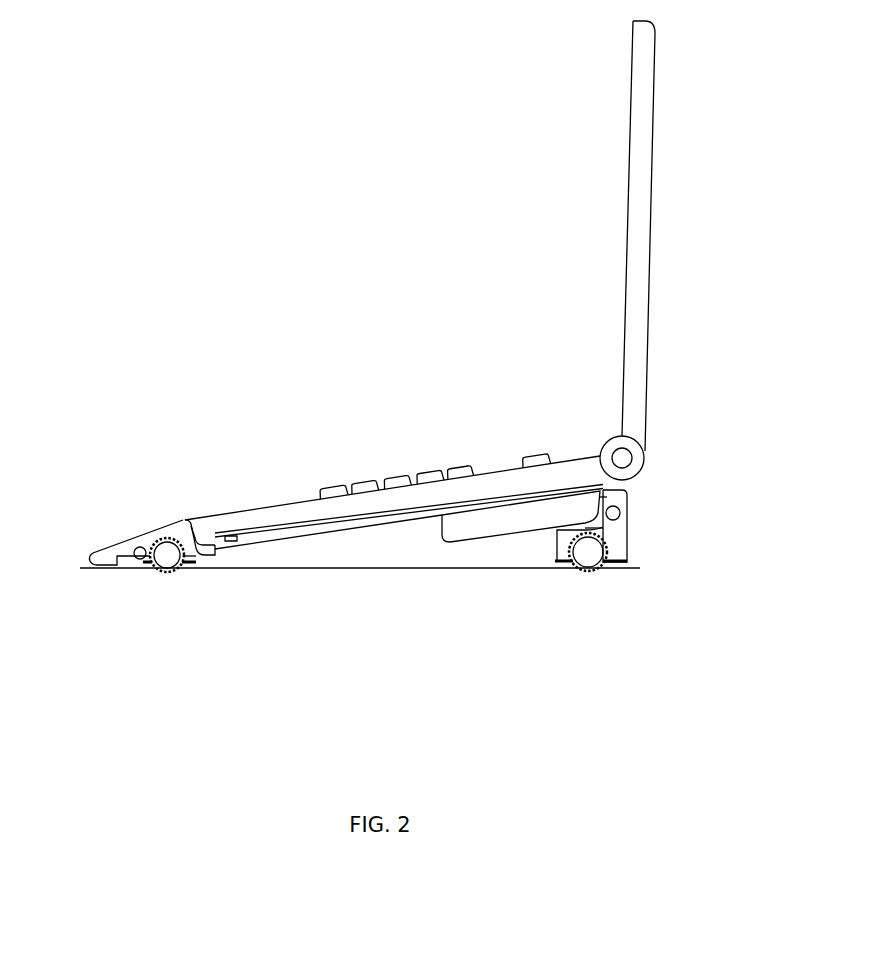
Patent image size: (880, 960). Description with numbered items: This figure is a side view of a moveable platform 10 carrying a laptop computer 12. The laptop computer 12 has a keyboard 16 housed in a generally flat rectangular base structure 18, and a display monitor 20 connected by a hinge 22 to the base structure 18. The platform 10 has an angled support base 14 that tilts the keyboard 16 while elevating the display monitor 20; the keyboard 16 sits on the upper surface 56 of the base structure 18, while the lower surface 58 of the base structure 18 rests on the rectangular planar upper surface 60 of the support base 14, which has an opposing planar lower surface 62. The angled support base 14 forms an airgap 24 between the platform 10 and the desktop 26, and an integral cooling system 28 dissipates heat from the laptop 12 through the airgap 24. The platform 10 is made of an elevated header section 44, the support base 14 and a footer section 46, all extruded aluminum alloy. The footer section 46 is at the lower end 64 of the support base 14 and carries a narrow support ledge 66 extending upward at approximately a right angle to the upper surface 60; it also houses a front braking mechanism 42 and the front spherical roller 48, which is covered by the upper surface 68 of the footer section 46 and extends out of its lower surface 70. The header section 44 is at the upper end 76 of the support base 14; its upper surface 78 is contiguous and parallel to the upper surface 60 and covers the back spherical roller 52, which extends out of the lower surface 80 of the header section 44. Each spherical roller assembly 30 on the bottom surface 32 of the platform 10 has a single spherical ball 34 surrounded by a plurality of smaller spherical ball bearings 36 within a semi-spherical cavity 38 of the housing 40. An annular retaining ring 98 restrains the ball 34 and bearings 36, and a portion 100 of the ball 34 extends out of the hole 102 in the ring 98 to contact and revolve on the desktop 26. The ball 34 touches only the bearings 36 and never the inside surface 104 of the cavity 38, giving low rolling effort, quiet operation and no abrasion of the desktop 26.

The moveable platform 10 is at (273, 650).
The laptop computer 12 is at (682, 236).
The angled support base 14 is at (471, 503).
The keyboard 16 is at (395, 478).
The base structure 18 is at (392, 450).
The display monitor 20 is at (642, 233).
The hinge 22 is at (622, 458).
The airgap 24 is at (308, 508).
The desktop 26 is at (368, 541).
The integral cooling system 28 is at (480, 528).
The spherical roller assembly 30 is at (592, 575).
The bottom surface 32 is at (83, 574).
The spherical ball 34 is at (586, 560).
The spherical ball bearings 36 is at (633, 563).
The semi-spherical cavity 38 is at (607, 551).
The housing 40 is at (613, 535).
The front braking mechanism 42 is at (137, 547).
The header section 44 is at (675, 452).
The footer section 46 is at (114, 500).
The front spherical roller 48 is at (162, 567).
The back spherical roller 52 is at (585, 567).
The upper surface of the base structure 56 is at (573, 463).
The lower surface of the base structure 58 is at (487, 500).
The upper surface of the support base 60 is at (340, 541).
The lower surface of the support base 62 is at (300, 545).
The lower end 64 is at (197, 515).
The support ledge 66 is at (182, 518).
The upper surface of the footer section 68 is at (95, 555).
The lower surface of the footer section 70 is at (107, 566).
The upper end 76 is at (620, 485).
The upper surface of the header section 78 is at (627, 494).
The lower surface of the header section 80 is at (617, 567).
The annular retaining ring 98 is at (580, 563).
The portion of the spherical ball 100 is at (583, 565).
The hole 102 is at (593, 567).
The inside surface 104 is at (575, 560).